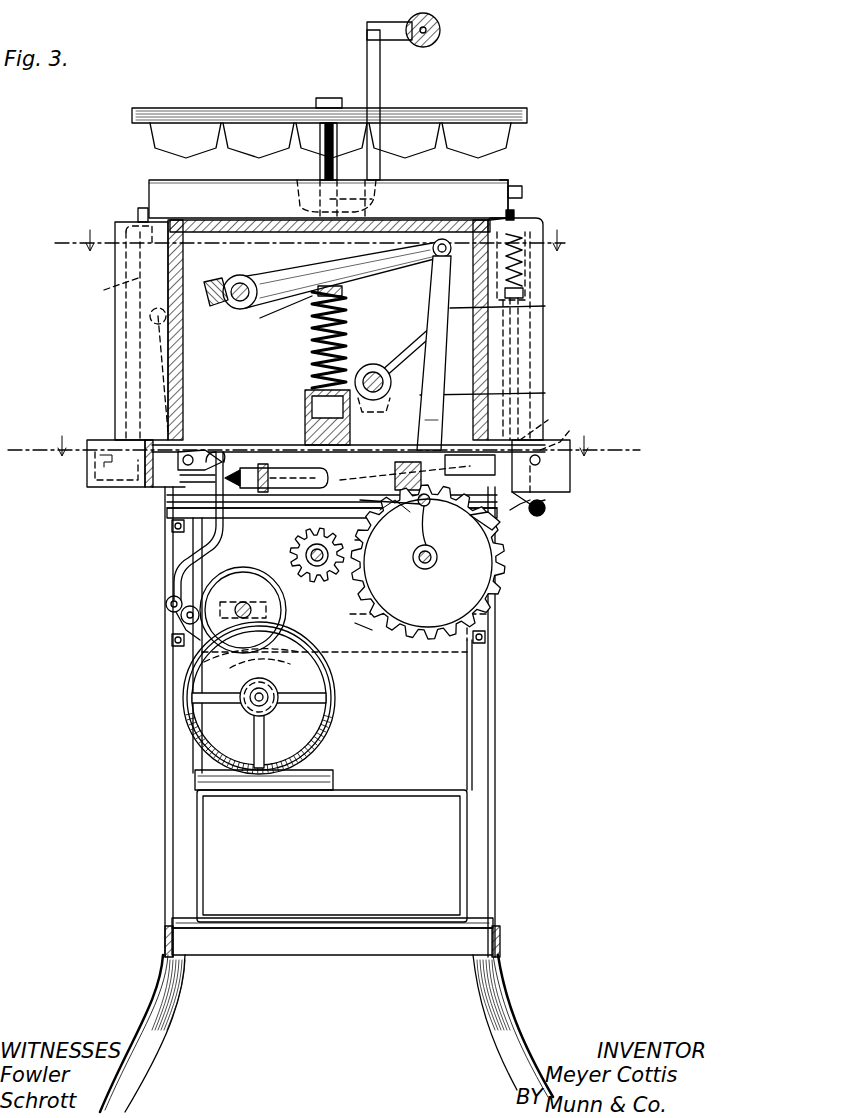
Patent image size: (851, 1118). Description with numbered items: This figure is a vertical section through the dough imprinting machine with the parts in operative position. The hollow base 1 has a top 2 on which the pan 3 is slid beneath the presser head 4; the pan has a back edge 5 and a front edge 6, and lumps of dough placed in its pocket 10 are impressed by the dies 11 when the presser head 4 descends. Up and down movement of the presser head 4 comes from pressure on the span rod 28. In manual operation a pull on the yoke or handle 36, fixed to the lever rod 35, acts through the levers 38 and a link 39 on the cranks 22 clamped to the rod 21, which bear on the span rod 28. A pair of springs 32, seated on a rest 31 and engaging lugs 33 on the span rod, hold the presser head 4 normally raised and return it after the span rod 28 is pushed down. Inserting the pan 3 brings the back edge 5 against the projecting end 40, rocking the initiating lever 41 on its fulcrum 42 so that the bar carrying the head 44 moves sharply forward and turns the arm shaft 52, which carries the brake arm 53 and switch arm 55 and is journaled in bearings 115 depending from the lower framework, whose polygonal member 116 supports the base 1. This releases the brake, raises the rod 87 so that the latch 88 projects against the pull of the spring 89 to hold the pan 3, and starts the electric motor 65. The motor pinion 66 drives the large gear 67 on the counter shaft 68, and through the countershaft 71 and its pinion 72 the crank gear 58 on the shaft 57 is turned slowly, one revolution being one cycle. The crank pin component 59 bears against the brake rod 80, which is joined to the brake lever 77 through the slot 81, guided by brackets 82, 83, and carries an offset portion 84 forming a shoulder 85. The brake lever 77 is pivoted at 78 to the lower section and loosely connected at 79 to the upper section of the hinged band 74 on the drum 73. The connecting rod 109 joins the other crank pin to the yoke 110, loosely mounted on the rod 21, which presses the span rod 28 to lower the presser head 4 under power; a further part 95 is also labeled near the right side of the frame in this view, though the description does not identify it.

The hollow base 1 is at (486, 360).
The top 2 is at (522, 192).
The pan 3 is at (482, 190).
The presser head 4 is at (512, 122).
The back edge 5 is at (148, 192).
The front edge 6 is at (505, 184).
The pocket 10 is at (372, 199).
The dies 11 is at (355, 131).
The rod 21 is at (238, 300).
The crank 22 is at (210, 292).
The span rod 28 is at (286, 315).
The rest 31 is at (305, 420).
The springs 32 is at (312, 352).
The lugs 33 is at (344, 292).
The lever rod 35 is at (428, 398).
The yoke or handle 36 is at (381, 60).
The levers 38 is at (395, 352).
The link 39 is at (545, 306).
The projecting end 40 is at (138, 213).
The initiating lever 41 is at (104, 290).
The fulcrum 42 is at (150, 318).
The head 44 is at (456, 455).
The arm shaft 52 is at (543, 513).
The brake arm 53 is at (528, 512).
The switch arm 55 is at (572, 432).
The shaft 57 is at (426, 569).
The crank gear 58 is at (504, 572).
The crank pin component 59 is at (420, 540).
The electric motor 65 is at (330, 685).
The pinion 66 is at (282, 707).
The large gear 67 is at (356, 632).
The counter shaft 68 is at (236, 604).
The countershaft 71 is at (412, 562).
The pinion 72 is at (317, 569).
The drum 73 is at (240, 648).
The hinged band 74 is at (256, 680).
The brake lever 77 is at (165, 542).
The pivotal connection 78 is at (184, 624).
The loose connection 79 is at (166, 604).
The brake rod 80 is at (262, 464).
The slot 81 is at (205, 452).
The bracket 82 is at (272, 512).
The bracket 83 is at (384, 513).
The offset portion 84 is at (400, 462).
The shoulder 85 is at (475, 520).
The rod 87 is at (518, 293).
The latch 88 is at (516, 216).
The spring 89 is at (524, 238).
The pin 95 is at (548, 420).
The connecting rod 109 is at (545, 393).
The yoke 110 is at (278, 280).
The bearings 115 is at (545, 500).
The polygonal member 116 is at (570, 484).